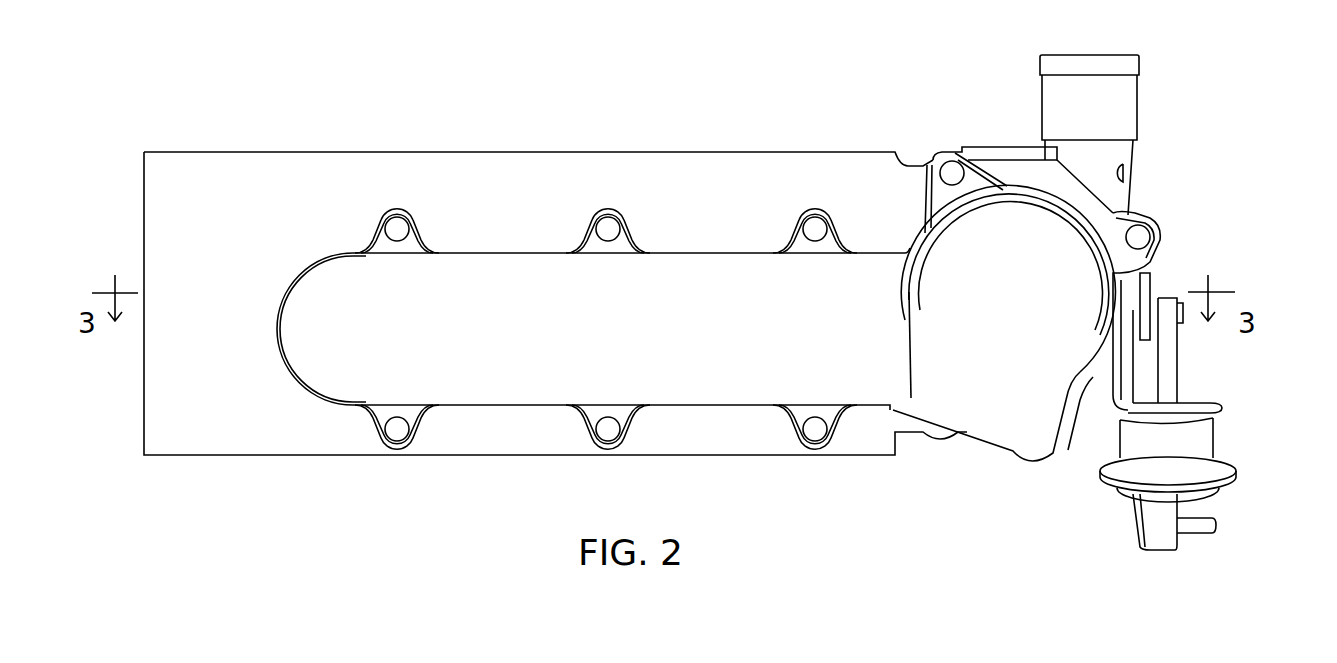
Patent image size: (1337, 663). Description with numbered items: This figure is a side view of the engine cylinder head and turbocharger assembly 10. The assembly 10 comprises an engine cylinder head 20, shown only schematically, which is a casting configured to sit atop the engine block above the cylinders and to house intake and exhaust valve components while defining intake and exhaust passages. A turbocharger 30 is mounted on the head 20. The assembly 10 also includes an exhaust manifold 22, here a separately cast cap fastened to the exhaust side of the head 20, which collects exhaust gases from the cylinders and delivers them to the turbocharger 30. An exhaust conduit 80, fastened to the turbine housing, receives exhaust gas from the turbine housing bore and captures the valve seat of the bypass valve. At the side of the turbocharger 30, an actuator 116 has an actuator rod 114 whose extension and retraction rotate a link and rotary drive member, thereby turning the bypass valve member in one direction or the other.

The engine cylinder head and turbocharger assembly 10 is at (372, 131).
The engine cylinder head 20 is at (545, 176).
The exhaust manifold 22 is at (345, 370).
The turbocharger 30 is at (982, 138).
The exhaust conduit 80 is at (965, 283).
The actuator rod 114 is at (1170, 357).
The actuator 116 is at (1108, 455).